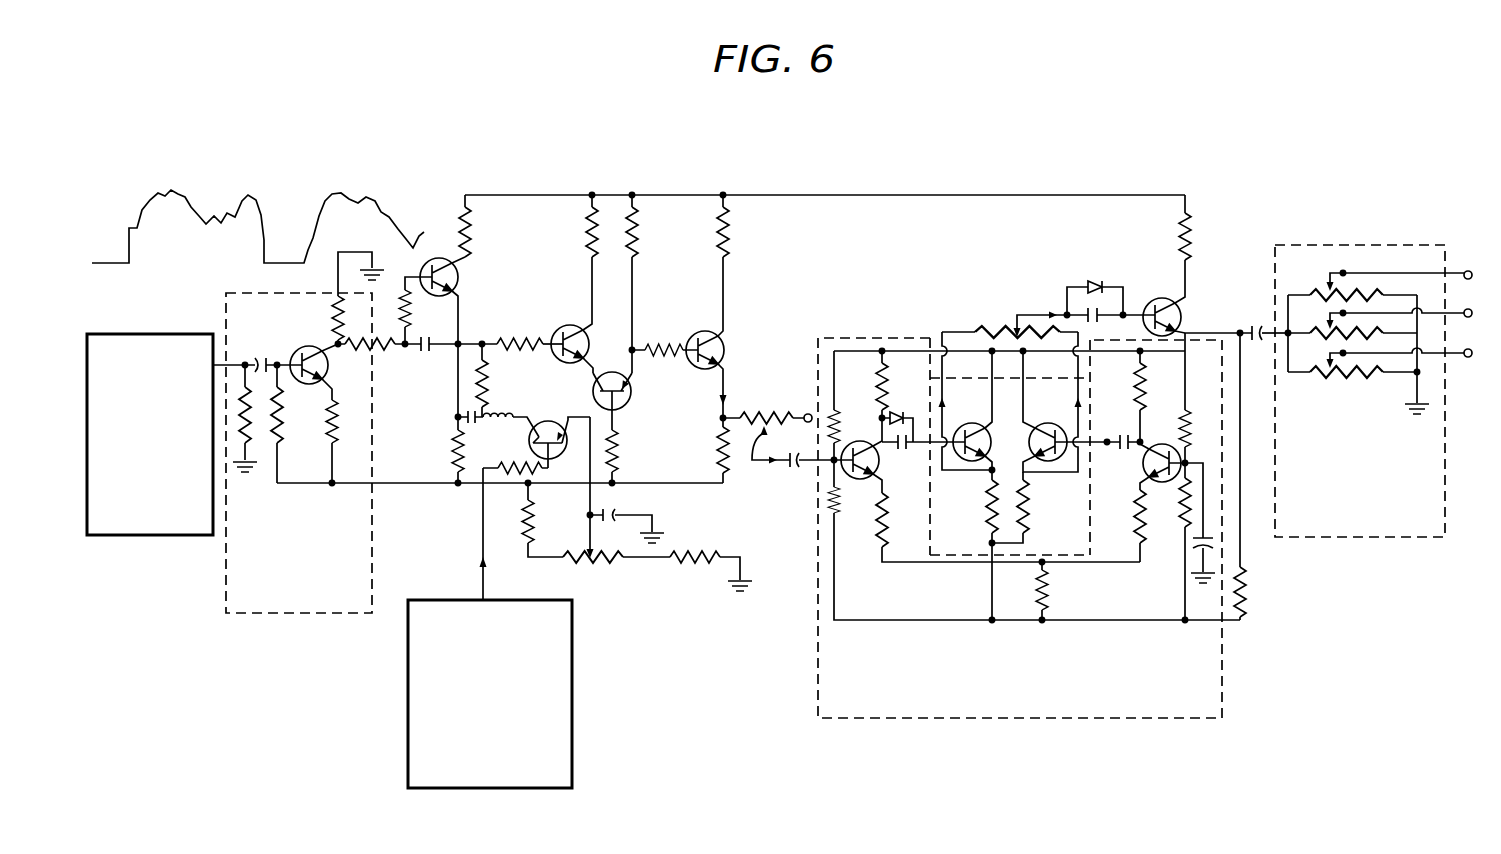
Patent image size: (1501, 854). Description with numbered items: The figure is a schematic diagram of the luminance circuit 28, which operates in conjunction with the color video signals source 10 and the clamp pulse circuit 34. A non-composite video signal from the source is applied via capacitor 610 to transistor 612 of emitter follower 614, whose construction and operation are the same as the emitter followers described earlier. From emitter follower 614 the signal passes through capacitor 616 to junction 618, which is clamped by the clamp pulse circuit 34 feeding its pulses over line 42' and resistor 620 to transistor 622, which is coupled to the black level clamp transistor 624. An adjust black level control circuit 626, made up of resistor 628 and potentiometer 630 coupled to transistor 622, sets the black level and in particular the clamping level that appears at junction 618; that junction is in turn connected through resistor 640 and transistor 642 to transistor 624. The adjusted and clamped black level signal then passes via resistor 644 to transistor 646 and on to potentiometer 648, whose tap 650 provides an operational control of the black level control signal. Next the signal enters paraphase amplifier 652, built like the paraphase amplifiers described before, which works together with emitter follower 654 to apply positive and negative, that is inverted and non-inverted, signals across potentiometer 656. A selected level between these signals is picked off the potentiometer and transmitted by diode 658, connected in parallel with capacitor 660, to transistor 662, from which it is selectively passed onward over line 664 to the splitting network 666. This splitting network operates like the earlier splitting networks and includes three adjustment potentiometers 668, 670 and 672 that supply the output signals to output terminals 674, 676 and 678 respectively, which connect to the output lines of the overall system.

The color video signals source 10 is at (150, 434).
The luminance circuit 28 is at (1102, 178).
The clamp pulse circuit 34 is at (490, 694).
The line 42' is at (455, 534).
The capacitor 610 is at (259, 357).
The transistor 612 is at (296, 342).
The emitter follower 614 is at (299, 453).
The capacitor 616 is at (423, 359).
The junction 618 is at (482, 342).
The resistor 620 is at (522, 466).
The transistor 622 is at (567, 449).
The black level clamp transistor 624 is at (632, 406).
The adjust black level control circuit 626 is at (730, 648).
The resistor 628 is at (706, 556).
The potentiometer 630 is at (571, 563).
The resistor 640 is at (533, 340).
The transistor 642 is at (626, 350).
The resistor 644 is at (667, 343).
The transistor 646 is at (703, 325).
The potentiometer 648 is at (775, 412).
The tap 650 is at (753, 464).
The paraphase amplifier 652 is at (1020, 528).
The emitter follower 654 is at (978, 582).
The potentiometer 656 is at (992, 325).
The diode 658 is at (1096, 280).
The capacitor 660 is at (1104, 322).
The transistor 662 is at (1181, 314).
The line 664 is at (1257, 322).
The splitting network 666 is at (1360, 391).
The adjustment potentiometer 668 is at (1320, 292).
The adjustment potentiometer 670 is at (1323, 336).
The adjustment potentiometer 672 is at (1322, 378).
The output terminal 674 is at (1468, 271).
The output terminal 676 is at (1413, 303).
The output terminal 678 is at (1413, 342).